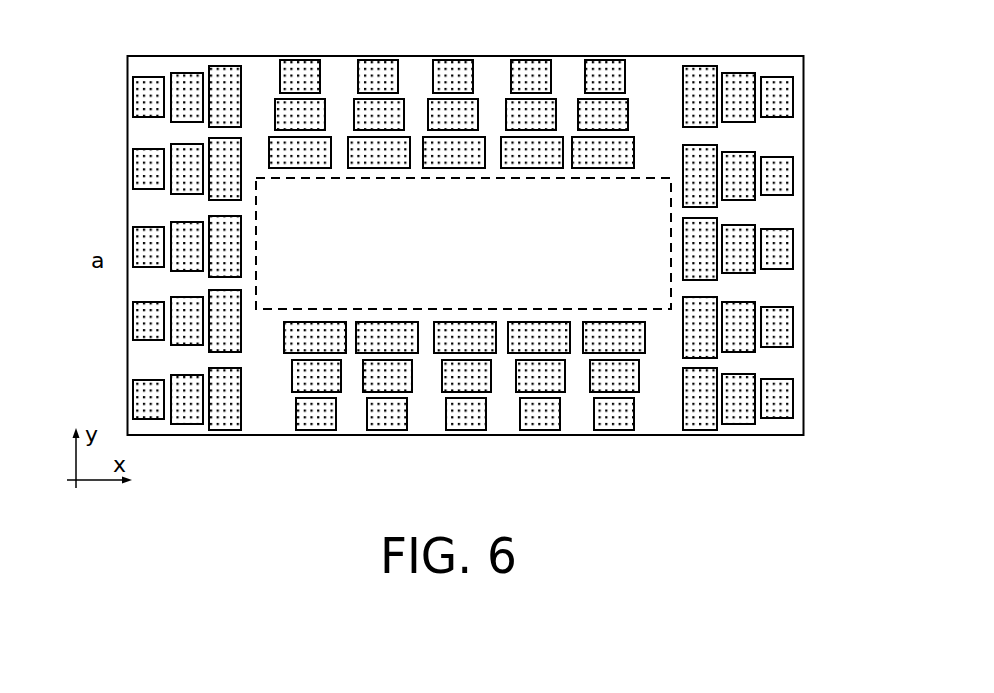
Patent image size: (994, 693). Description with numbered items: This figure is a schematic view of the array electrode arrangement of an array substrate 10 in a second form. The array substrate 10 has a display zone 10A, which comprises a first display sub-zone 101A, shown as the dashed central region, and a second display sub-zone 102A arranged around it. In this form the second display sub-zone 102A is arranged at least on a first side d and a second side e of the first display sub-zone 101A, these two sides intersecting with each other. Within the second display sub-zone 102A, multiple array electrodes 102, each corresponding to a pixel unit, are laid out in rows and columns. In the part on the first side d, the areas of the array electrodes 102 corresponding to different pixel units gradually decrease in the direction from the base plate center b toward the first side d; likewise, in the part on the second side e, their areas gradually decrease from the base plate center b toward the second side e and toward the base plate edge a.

The array substrate 10 is at (88, 38).
The display zone 10A is at (888, 213).
The first display sub-zone 101A is at (659, 294).
The second display sub-zone 102A is at (802, 218).
The array electrode 102 is at (785, 171).